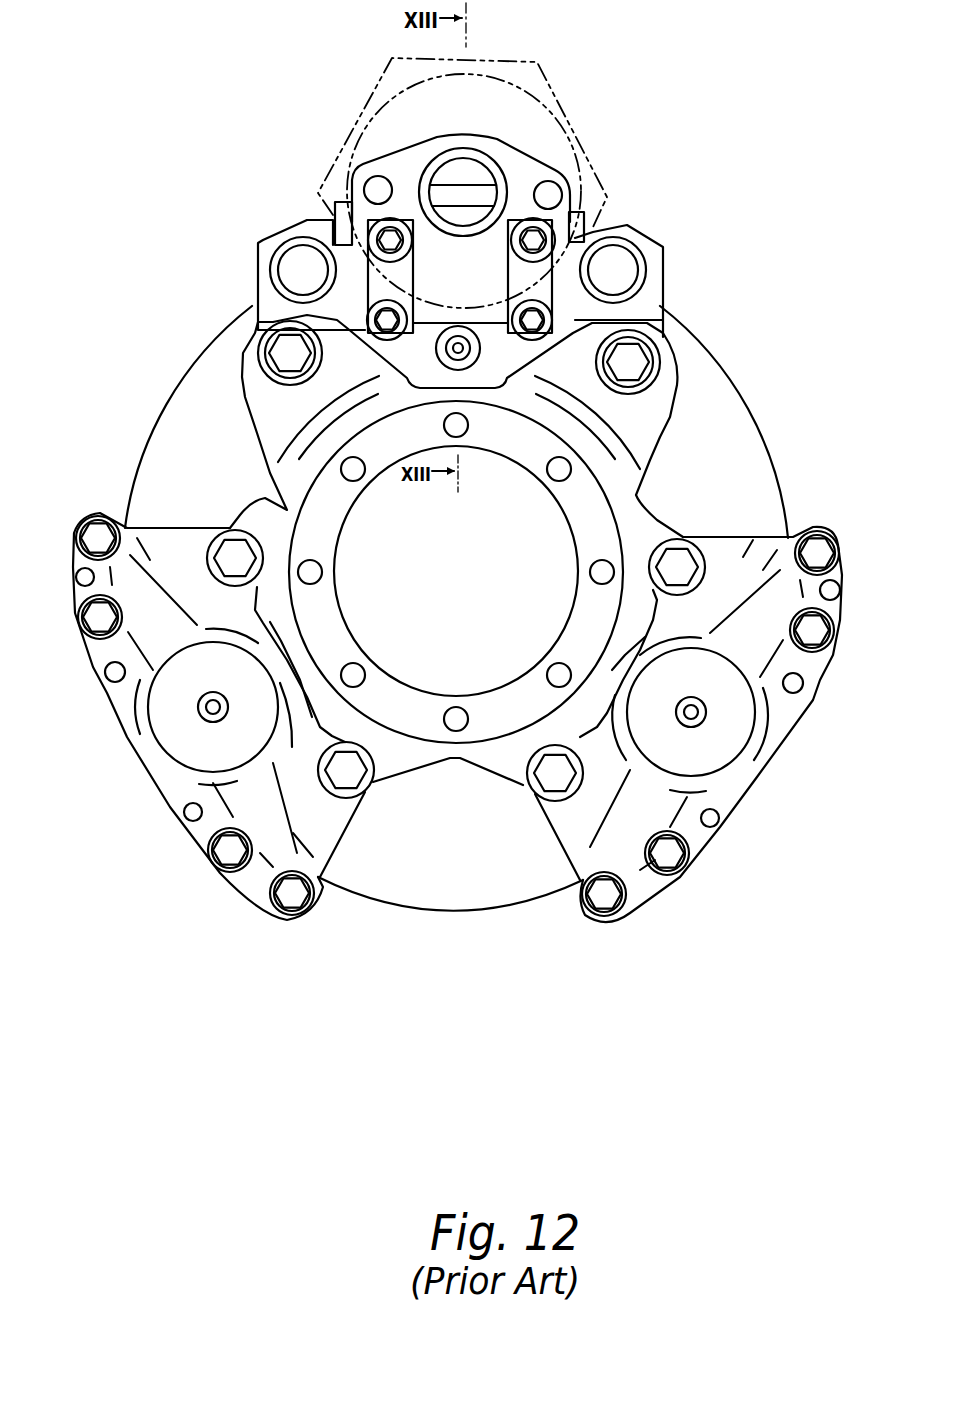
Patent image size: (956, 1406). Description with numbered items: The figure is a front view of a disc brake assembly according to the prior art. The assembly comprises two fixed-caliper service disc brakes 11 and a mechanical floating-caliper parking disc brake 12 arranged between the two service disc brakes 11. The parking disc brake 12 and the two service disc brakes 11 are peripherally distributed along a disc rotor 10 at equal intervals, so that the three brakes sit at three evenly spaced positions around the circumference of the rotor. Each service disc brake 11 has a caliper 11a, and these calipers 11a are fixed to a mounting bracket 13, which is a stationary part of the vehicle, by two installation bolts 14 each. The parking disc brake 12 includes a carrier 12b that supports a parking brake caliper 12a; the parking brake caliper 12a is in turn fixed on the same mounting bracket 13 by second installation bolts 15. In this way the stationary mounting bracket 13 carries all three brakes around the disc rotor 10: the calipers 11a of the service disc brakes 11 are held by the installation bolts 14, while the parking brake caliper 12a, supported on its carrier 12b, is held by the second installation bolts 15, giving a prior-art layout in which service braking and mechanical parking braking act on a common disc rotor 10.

The disc rotor 10 is at (730, 403).
The fixed-caliper service disc brake 11 is at (125, 758).
The caliper 11a is at (757, 537).
The mechanical floating-caliper parking disc brake 12 is at (296, 198).
The parking brake caliper 12a is at (557, 245).
The carrier 12b is at (665, 272).
The mounting bracket 13 is at (297, 457).
The installation bolt 14 is at (237, 557).
The second installation bolt 15 is at (293, 358).